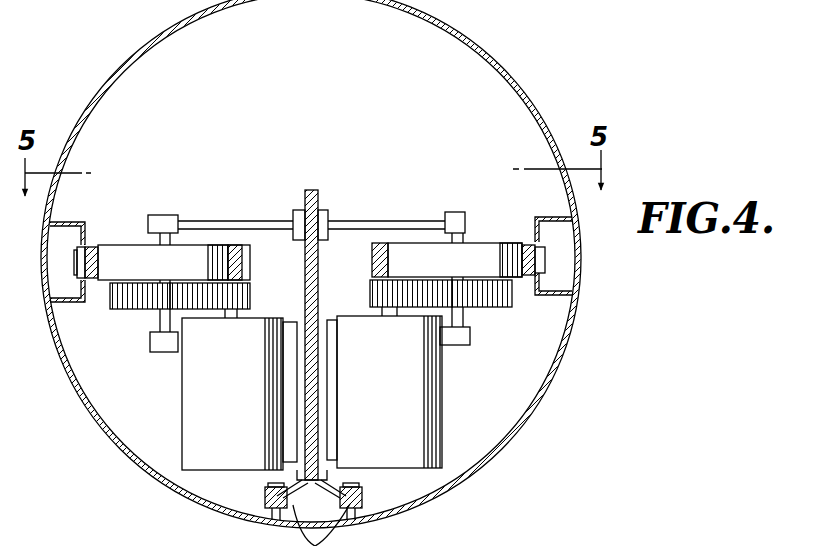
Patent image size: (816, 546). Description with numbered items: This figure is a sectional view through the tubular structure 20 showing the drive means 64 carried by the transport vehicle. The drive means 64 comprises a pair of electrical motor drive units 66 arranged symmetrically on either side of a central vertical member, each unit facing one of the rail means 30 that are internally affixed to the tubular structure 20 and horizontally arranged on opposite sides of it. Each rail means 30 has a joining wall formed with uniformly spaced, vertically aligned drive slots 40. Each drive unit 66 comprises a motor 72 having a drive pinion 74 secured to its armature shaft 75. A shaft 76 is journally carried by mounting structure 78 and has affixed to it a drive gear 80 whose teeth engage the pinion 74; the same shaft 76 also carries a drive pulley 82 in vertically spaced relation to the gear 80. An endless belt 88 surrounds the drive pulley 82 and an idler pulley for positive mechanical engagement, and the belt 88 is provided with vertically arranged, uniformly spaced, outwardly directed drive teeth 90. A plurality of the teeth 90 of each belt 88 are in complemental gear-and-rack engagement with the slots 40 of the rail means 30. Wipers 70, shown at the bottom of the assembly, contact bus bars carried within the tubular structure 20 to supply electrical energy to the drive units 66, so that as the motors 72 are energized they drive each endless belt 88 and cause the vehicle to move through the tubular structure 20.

The tubular structure 20 is at (489, 53).
The rail means 30 is at (86, 218).
The drive slots 40 is at (78, 250).
The drive means 64 is at (130, 405).
The electrical motor drive unit 66 is at (178, 457).
The wipers 70 is at (265, 491).
The motor 72 is at (312, 393).
The drive pinion 74 is at (248, 289).
The armature shaft 75 is at (240, 313).
The shaft 76 is at (158, 318).
The mounting structure 78 is at (228, 223).
The drive gear 80 is at (113, 291).
The drive pulley 82 is at (475, 247).
The endless belt 88 is at (90, 248).
The drive teeth 90 is at (79, 262).